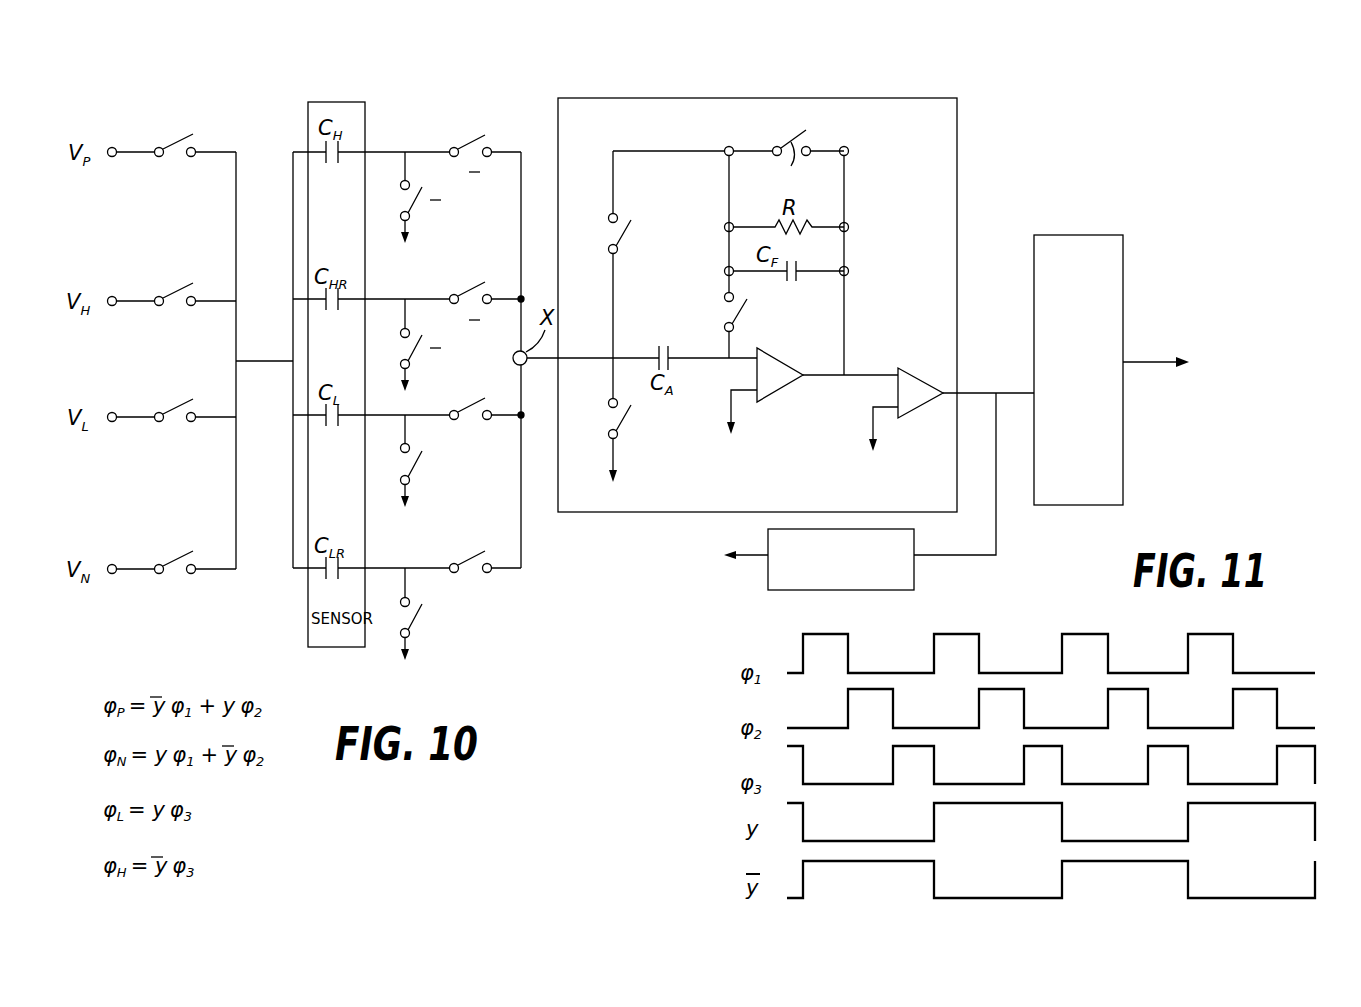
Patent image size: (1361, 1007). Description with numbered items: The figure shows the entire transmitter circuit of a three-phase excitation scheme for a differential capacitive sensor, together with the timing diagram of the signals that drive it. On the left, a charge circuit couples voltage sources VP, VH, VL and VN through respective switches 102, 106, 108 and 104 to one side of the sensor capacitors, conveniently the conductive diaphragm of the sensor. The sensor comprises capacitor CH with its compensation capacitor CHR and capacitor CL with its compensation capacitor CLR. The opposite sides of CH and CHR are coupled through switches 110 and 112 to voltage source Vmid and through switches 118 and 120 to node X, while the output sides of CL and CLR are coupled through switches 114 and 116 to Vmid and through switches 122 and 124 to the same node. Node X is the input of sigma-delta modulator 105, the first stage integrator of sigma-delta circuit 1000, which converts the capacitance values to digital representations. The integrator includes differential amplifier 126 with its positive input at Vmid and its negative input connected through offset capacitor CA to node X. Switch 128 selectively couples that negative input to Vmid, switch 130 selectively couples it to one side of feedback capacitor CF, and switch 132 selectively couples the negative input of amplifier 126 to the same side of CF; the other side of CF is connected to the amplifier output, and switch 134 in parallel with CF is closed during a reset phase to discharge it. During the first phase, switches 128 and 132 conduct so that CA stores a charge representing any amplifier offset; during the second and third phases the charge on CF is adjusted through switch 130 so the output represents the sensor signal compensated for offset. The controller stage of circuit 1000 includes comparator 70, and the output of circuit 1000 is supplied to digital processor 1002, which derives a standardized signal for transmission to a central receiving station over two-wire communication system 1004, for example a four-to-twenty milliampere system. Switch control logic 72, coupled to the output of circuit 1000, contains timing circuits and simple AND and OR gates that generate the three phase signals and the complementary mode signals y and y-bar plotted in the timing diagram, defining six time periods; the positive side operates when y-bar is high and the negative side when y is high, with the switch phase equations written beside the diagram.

The switch 102 is at (173, 141).
The switch 106 is at (173, 290).
The switch 108 is at (173, 405).
The switch 104 is at (173, 557).
The switch 110 is at (410, 209).
The switch 112 is at (410, 357).
The switch 114 is at (410, 473).
The switch 116 is at (410, 626).
The switch 118 is at (470, 144).
The switch 120 is at (469, 294).
The switch 122 is at (469, 410).
The switch 124 is at (469, 563).
The sigma-delta modulator 105 is at (720, 142).
The switch 130 is at (622, 239).
The switch 128 is at (622, 424).
The switch 132 is at (748, 312).
The switch 134 is at (789, 151).
The differential amplifier 126 is at (790, 383).
The comparator 70 is at (921, 366).
The switch control logic 72 is at (768, 539).
The sigma-delta circuit 1000 is at (957, 166).
The digital processor 1002 is at (1123, 297).
The two-wire communication system 1004 is at (1140, 363).